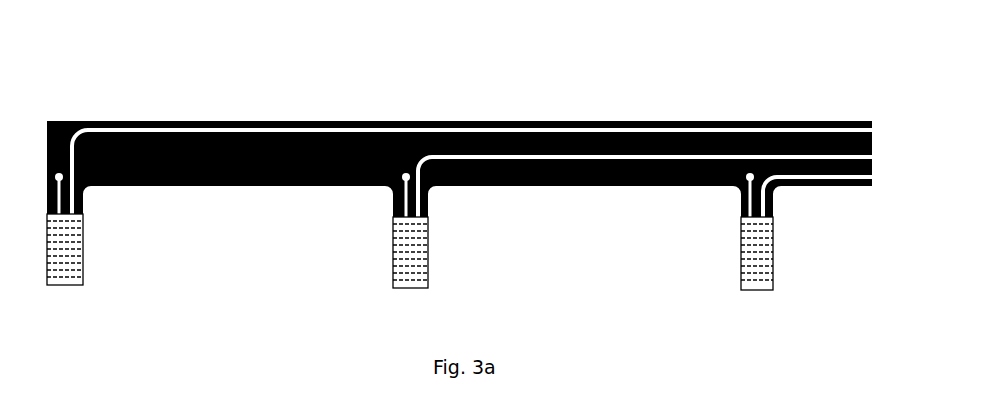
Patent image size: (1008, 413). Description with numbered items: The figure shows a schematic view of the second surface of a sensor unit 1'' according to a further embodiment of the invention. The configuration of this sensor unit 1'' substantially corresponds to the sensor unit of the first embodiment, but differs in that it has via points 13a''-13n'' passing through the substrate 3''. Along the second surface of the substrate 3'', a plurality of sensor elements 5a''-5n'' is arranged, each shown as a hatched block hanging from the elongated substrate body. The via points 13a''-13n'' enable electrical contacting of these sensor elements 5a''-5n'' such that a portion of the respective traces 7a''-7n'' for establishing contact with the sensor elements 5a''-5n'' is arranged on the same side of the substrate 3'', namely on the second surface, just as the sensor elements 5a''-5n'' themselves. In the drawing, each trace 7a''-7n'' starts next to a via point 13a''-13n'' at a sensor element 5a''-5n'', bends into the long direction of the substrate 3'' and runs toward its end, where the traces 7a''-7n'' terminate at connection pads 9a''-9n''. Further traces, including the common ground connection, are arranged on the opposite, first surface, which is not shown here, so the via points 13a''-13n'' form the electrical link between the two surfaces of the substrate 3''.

The sensor unit 1'' is at (459, 143).
The substrate 3'' is at (381, 201).
The sensor element 5a'' is at (96, 249).
The sensor element 5n'' is at (785, 253).
The trace 7a'' is at (472, 155).
The trace 7n'' is at (817, 197).
The connection pad 9a'' is at (840, 112).
The connection pad 9n'' is at (856, 200).
The via point 13a'' is at (75, 144).
The via point 13n'' is at (720, 201).